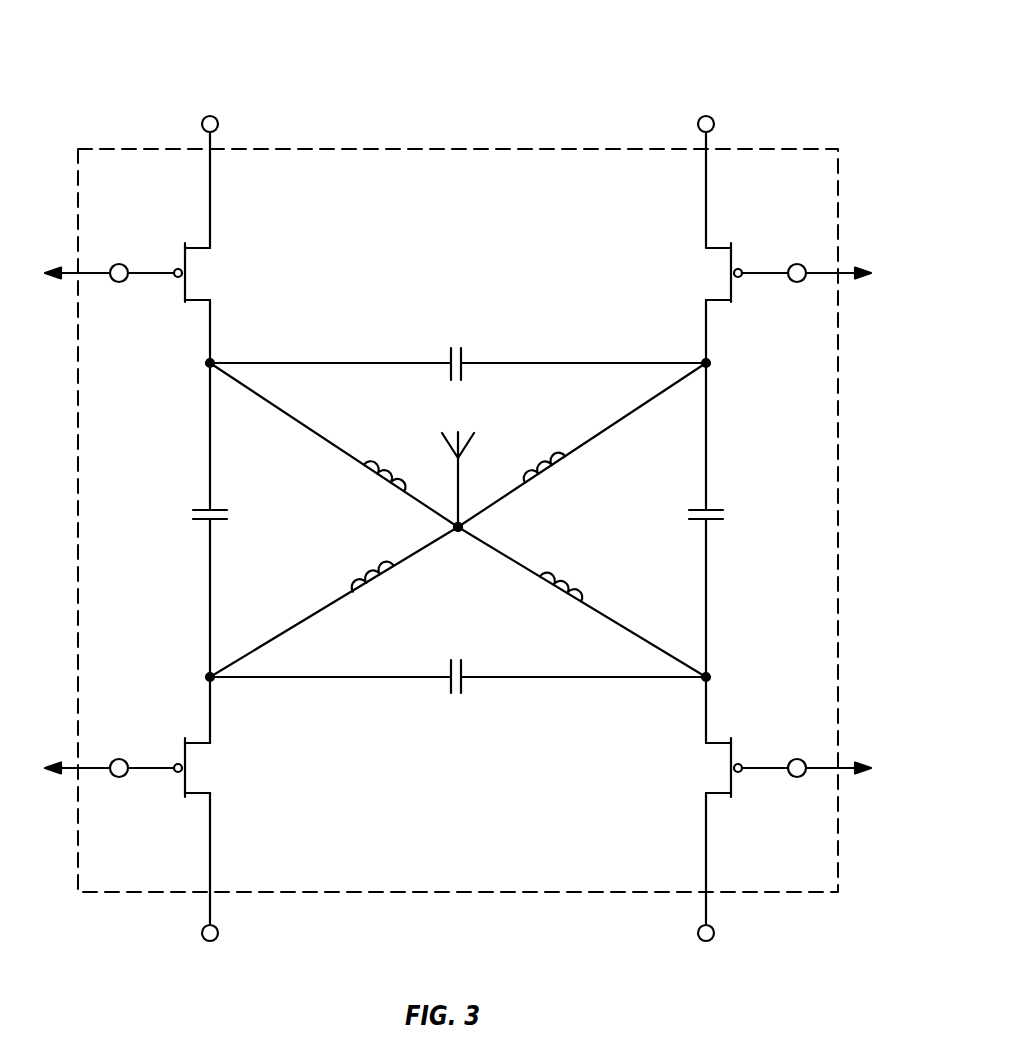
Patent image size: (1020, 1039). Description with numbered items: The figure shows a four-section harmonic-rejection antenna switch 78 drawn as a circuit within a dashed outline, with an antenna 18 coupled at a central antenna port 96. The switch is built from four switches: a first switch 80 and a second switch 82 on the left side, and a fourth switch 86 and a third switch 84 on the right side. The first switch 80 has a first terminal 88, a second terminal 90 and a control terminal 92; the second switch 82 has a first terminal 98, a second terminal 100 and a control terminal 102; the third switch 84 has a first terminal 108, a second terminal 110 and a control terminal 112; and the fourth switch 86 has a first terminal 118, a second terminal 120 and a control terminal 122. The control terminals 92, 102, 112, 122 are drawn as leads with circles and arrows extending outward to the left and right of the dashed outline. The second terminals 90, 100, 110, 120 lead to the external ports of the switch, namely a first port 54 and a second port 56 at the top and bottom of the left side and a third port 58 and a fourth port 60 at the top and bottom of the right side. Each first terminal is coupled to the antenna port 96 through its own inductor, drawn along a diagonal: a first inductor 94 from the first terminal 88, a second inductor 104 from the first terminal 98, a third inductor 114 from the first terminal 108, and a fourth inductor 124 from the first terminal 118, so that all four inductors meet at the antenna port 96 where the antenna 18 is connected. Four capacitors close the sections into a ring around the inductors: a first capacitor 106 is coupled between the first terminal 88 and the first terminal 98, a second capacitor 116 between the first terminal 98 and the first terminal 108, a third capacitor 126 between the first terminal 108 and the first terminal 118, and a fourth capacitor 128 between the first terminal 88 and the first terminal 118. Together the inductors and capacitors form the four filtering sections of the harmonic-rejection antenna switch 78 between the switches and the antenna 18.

The four-section harmonic-rejection antenna switch 78 is at (528, 73).
The antenna 18 is at (462, 472).
The first port 54 is at (218, 122).
The second port 56 is at (218, 937).
The third port 58 is at (714, 122).
The fourth port 60 is at (714, 937).
The first switch 80 is at (127, 257).
The second switch 82 is at (127, 779).
The third switch 84 is at (788, 772).
The fourth switch 86 is at (788, 254).
The first terminal of the first switch 88 is at (192, 302).
The second terminal of the first switch 90 is at (200, 247).
The control terminal of the first switch 92 is at (150, 272).
The first inductor 94 is at (382, 477).
The antenna port 96 is at (460, 530).
The first terminal of the second switch 98 is at (198, 743).
The second terminal of the second switch 100 is at (193, 797).
The control terminal of the second switch 102 is at (150, 767).
The second inductor 104 is at (363, 583).
The first capacitor 106 is at (200, 508).
The first terminal of the third switch 108 is at (718, 743).
The second terminal of the third switch 110 is at (723, 797).
The control terminal of the third switch 112 is at (763, 767).
The third inductor 114 is at (577, 577).
The second capacitor 116 is at (462, 692).
The first terminal of the fourth switch 118 is at (720, 302).
The second terminal of the fourth switch 120 is at (721, 247).
The control terminal of the fourth switch 122 is at (763, 272).
The fourth inductor 124 is at (545, 470).
The third capacitor 126 is at (717, 508).
The fourth capacitor 128 is at (465, 360).